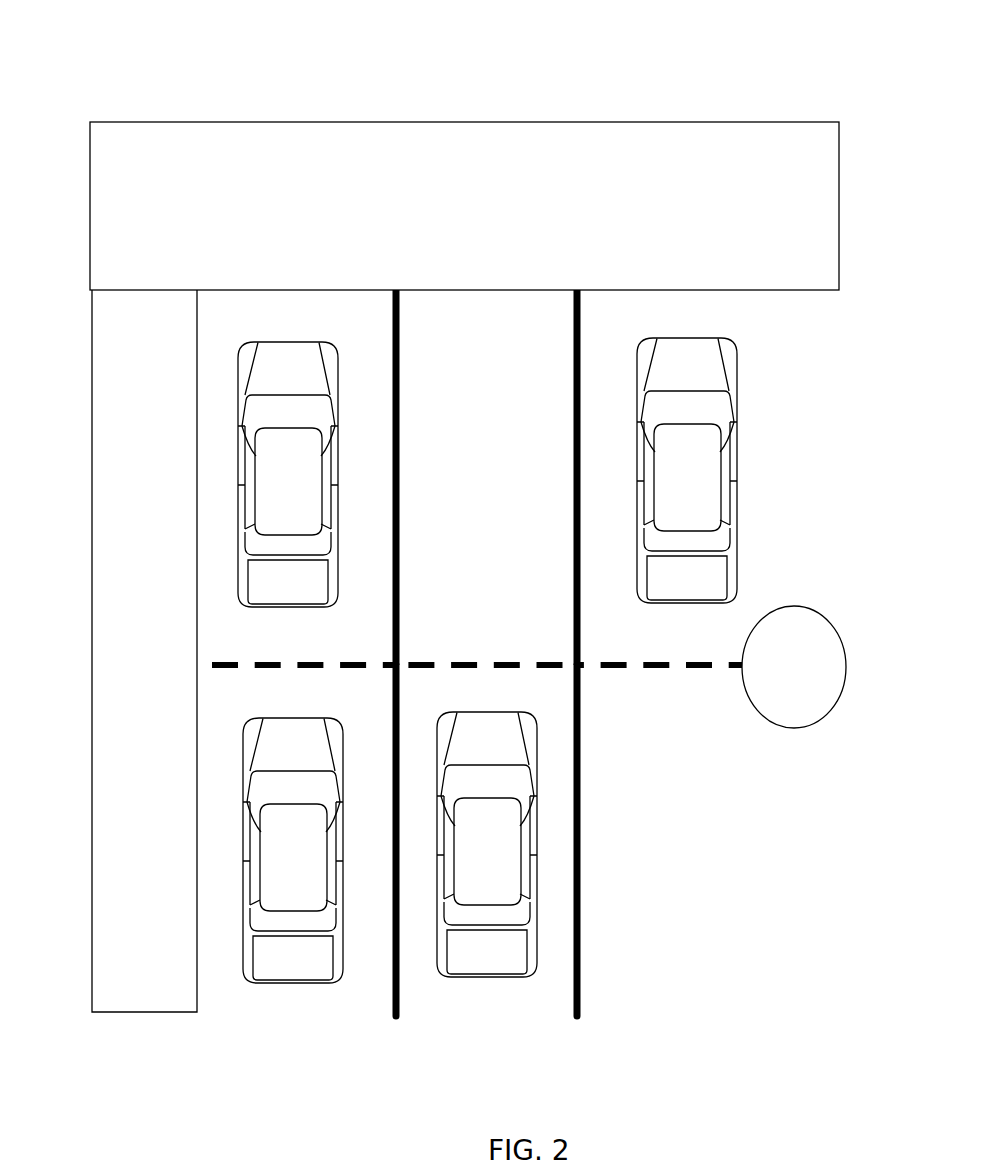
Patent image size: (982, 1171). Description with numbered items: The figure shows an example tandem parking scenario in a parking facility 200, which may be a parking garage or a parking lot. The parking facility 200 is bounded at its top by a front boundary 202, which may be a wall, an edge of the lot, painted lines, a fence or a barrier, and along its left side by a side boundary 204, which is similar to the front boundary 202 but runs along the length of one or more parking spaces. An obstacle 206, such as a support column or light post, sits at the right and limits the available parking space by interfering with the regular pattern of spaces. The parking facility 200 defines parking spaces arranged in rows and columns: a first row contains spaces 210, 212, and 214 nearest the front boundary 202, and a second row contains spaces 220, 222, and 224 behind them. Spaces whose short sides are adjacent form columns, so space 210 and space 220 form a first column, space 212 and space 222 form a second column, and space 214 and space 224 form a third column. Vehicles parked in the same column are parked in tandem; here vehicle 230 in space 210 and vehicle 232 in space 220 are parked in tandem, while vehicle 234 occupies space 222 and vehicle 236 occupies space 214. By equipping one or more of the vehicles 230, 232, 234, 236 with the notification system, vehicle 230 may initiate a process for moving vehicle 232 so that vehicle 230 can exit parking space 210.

The parking facility 200 is at (133, 60).
The front boundary 202 is at (353, 122).
The side boundary 204 is at (134, 462).
The obstacle 206 is at (800, 607).
The parking space 210 is at (305, 644).
The parking space 212 is at (493, 644).
The parking space 214 is at (696, 644).
The parking space 220 is at (311, 1024).
The parking space 222 is at (508, 1022).
The parking space 224 is at (690, 1022).
The vehicle 230 is at (302, 365).
The vehicle 232 is at (302, 747).
The vehicle 234 is at (498, 747).
The vehicle 236 is at (694, 365).